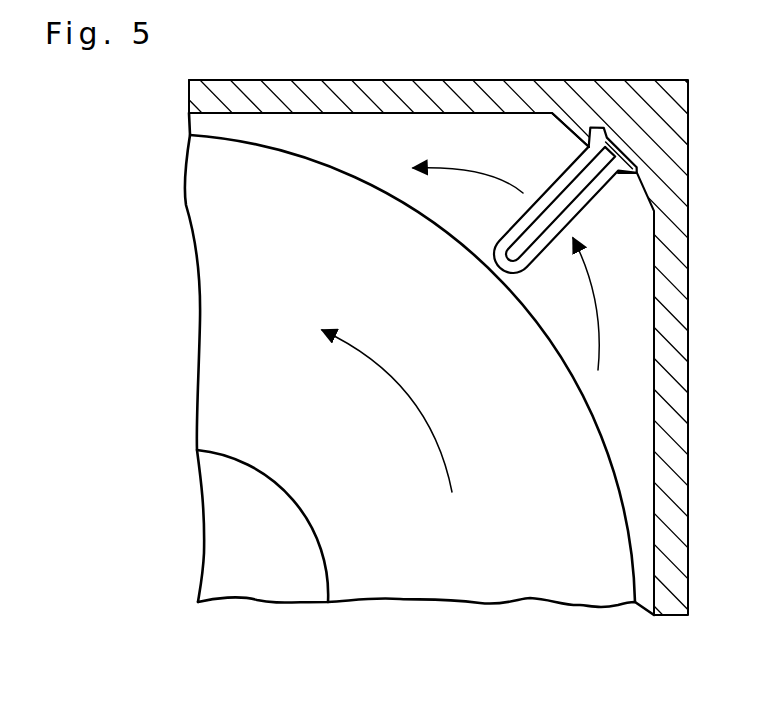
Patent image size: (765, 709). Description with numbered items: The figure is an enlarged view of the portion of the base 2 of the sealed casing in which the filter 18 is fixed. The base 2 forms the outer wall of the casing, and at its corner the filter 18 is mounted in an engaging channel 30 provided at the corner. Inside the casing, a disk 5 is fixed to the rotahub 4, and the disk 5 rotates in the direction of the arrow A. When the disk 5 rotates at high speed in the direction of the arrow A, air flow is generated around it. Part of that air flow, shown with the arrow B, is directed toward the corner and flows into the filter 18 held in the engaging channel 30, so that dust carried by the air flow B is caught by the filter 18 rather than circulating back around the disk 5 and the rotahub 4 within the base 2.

The base 2 is at (315, 128).
The filter 18 is at (567, 162).
The engaging channel 30 is at (603, 124).
The rotahub 4 is at (260, 583).
The disk 5 is at (463, 583).
The direction of rotation of the disk A is at (407, 397).
The air flow B is at (478, 173).